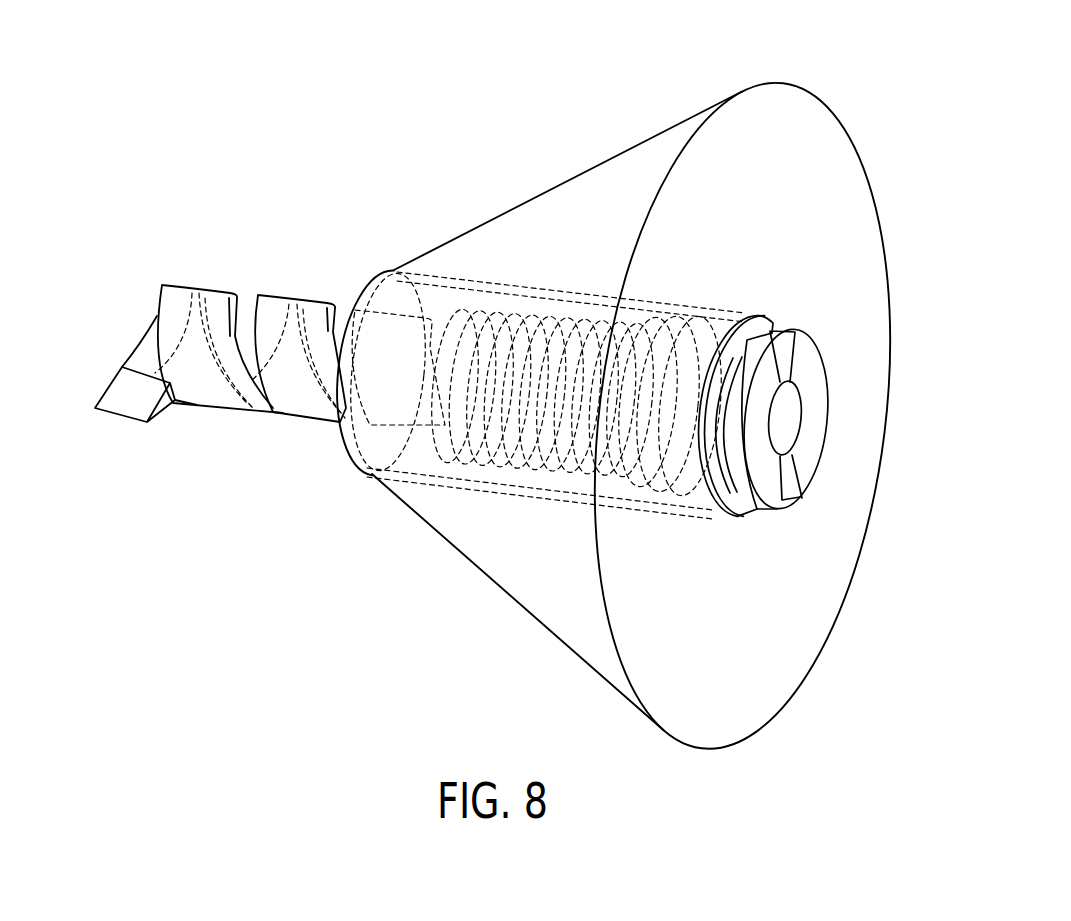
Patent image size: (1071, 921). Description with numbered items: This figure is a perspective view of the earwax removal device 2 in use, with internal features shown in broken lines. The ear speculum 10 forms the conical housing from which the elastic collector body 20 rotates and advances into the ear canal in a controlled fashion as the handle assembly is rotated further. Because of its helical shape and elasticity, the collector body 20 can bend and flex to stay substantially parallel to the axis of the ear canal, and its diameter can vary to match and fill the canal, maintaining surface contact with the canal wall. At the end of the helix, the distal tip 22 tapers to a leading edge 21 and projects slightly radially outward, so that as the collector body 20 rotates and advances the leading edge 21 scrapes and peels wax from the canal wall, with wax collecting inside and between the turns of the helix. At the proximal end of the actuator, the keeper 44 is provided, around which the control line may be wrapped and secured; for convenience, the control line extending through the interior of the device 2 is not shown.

The earwax removal device 2 is at (607, 84).
The ear speculum 10 is at (772, 690).
The elastic collector body 20 is at (313, 309).
The leading edge 21 is at (120, 422).
The distal tip 22 is at (117, 390).
The keeper 44 is at (810, 367).